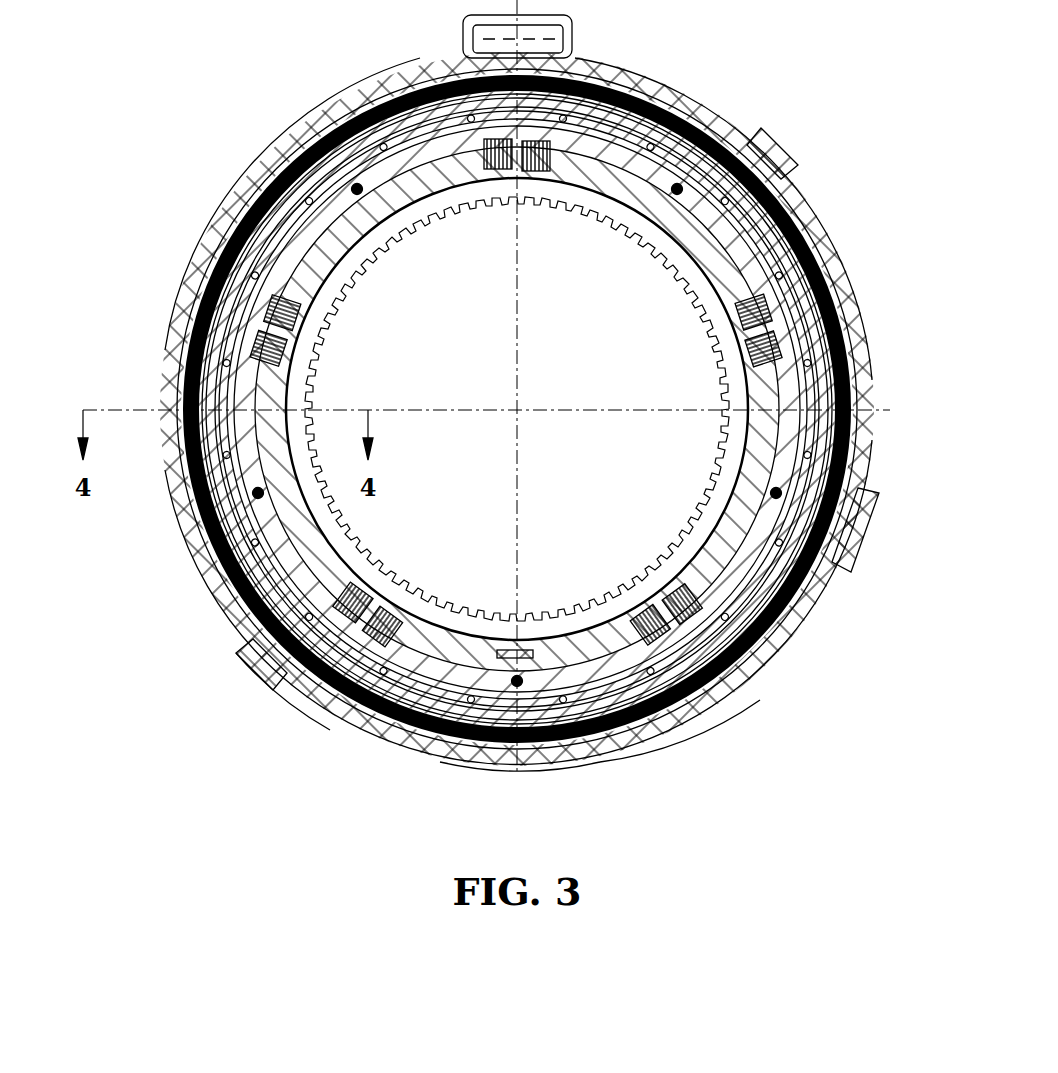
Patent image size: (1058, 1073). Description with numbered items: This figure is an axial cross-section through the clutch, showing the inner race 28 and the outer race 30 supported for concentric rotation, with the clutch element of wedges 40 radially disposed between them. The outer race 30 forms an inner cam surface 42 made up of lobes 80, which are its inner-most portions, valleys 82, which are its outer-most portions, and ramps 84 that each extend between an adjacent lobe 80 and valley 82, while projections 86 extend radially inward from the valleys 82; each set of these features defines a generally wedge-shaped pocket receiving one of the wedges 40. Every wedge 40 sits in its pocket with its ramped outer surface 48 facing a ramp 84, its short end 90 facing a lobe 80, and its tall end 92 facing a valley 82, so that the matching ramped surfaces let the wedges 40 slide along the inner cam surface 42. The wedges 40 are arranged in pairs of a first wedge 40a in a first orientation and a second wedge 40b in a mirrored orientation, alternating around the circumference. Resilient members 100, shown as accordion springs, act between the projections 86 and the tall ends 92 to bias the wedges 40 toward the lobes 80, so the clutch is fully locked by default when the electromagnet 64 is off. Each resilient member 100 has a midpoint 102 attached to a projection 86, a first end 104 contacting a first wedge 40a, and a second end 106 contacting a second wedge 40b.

The inner race 28 is at (722, 458).
The outer race 30 is at (545, 683).
The wedges 40 is at (738, 673).
The first wedge 40a is at (343, 113).
The second wedge 40b is at (730, 131).
The inner cam surface 42 is at (530, 660).
The outer surface 48 is at (663, 718).
The electromagnet 64 is at (442, 760).
The lobes 80 is at (755, 465).
The valleys 82 is at (848, 305).
The ramps 84 is at (773, 630).
The projections 86 is at (745, 350).
The short end 90 is at (205, 520).
The tall end 92 is at (287, 685).
The resilient members 100 is at (850, 368).
The midpoint 102 is at (522, 160).
The first end 104 is at (432, 180).
The second end 106 is at (645, 82).